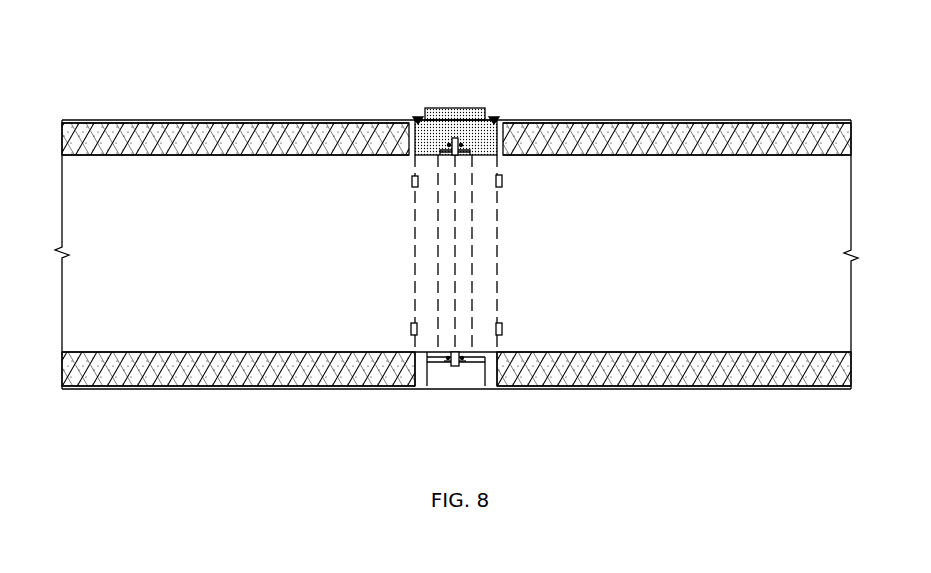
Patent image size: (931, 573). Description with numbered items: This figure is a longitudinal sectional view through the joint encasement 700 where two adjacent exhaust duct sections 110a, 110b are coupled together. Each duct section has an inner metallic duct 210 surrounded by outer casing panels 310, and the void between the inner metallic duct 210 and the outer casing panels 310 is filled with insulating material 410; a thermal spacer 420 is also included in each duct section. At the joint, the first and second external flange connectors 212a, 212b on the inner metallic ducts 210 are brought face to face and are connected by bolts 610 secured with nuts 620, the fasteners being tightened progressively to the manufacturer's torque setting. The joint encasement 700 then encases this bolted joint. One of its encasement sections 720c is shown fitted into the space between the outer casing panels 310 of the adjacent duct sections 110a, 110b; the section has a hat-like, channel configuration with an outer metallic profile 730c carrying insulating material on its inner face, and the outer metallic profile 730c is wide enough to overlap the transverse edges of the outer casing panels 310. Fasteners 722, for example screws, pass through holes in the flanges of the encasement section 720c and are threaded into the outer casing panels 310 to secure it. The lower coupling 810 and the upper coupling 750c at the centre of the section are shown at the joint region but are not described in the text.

The joint encasement 700 is at (508, 52).
The first exhaust duct section 110a is at (285, 85).
The second exhaust duct section 110b is at (592, 85).
The outer casing panel 310 is at (228, 120).
The insulating material 410 is at (217, 158).
The inner metallic duct 210 is at (300, 158).
The thermal spacer 420 is at (412, 174).
The bolt 610 is at (443, 153).
The nut 620 is at (466, 156).
The joint encasement section 720c is at (482, 108).
The outer metallic profile 730c is at (456, 108).
The fastener 722 is at (418, 116).
The upper coupling 750c is at (470, 150).
The lower coupling 810 is at (455, 368).
The first external flange connector 212a is at (460, 366).
The second external flange connector 212b is at (449, 366).